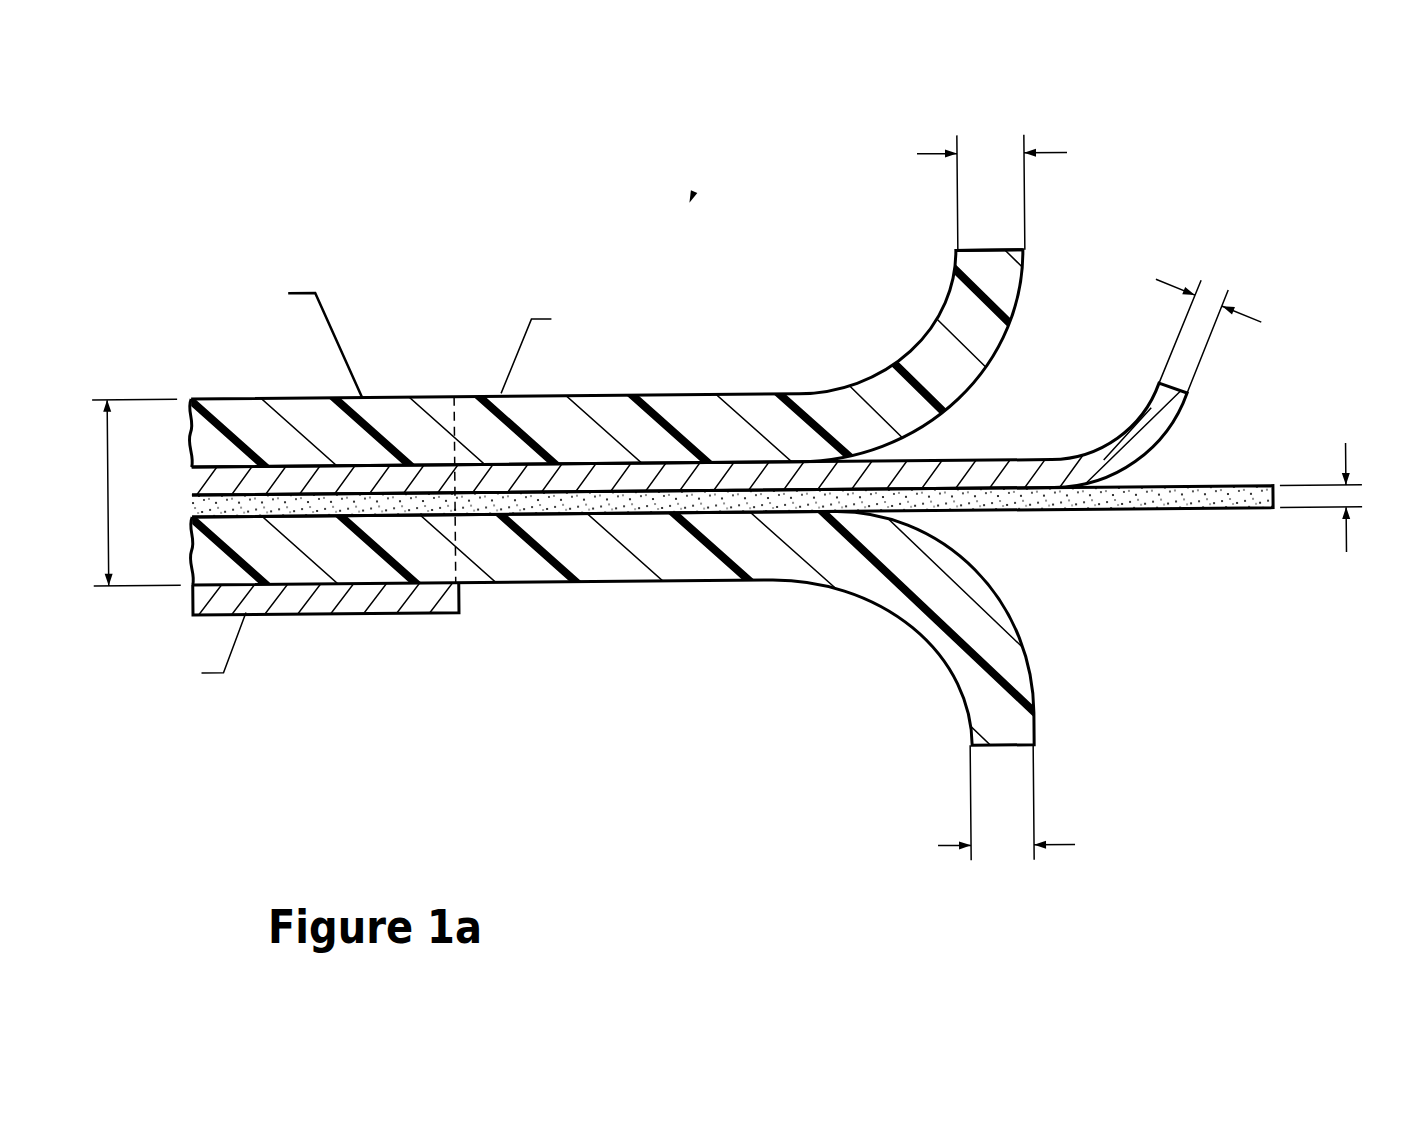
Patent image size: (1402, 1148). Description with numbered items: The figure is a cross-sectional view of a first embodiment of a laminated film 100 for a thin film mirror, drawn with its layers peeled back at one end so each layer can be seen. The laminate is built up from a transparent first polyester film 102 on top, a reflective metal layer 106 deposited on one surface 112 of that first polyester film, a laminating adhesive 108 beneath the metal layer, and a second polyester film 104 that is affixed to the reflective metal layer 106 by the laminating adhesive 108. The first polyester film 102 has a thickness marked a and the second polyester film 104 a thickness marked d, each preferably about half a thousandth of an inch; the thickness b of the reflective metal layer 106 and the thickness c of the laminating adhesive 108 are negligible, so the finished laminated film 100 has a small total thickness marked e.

The laminated film 100 is at (698, 476).
The transparent first polyester film 102 is at (475, 400).
The second polyester film 104 is at (491, 558).
The reflective metal layer 106 is at (1147, 438).
The laminating adhesive 108 is at (1150, 505).
The surface of the first polyester film 112 is at (1007, 306).